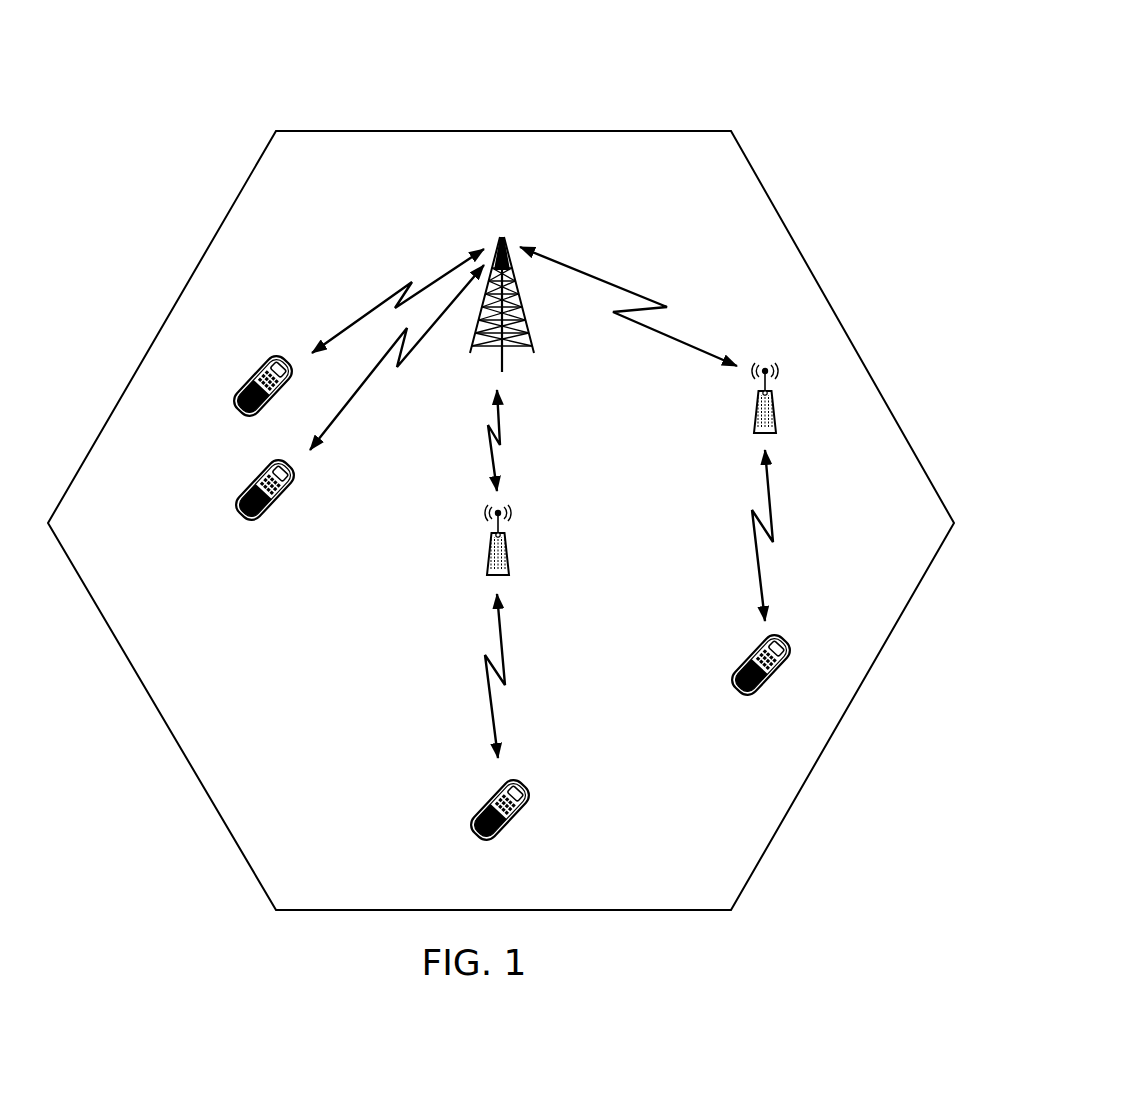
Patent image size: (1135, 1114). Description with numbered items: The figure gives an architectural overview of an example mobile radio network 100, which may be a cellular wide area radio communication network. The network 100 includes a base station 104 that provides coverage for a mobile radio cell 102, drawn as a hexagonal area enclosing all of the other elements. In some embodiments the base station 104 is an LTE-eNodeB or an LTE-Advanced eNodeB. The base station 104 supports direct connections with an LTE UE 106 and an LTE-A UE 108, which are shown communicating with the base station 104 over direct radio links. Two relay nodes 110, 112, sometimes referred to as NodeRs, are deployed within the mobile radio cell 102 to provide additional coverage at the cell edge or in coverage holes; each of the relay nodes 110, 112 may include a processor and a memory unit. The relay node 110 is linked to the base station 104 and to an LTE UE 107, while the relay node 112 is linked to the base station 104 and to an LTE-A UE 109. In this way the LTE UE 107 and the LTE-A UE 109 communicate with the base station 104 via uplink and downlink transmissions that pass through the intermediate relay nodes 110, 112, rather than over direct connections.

The mobile radio network 100 is at (673, 60).
The mobile radio cell 102 is at (262, 152).
The base station 104 is at (502, 238).
The LTE UE 106 is at (273, 363).
The LTE UE 107 is at (500, 786).
The LTE-A UE 108 is at (275, 467).
The LTE-A UE 109 is at (763, 645).
The relay node 110 is at (490, 540).
The relay node 112 is at (758, 396).